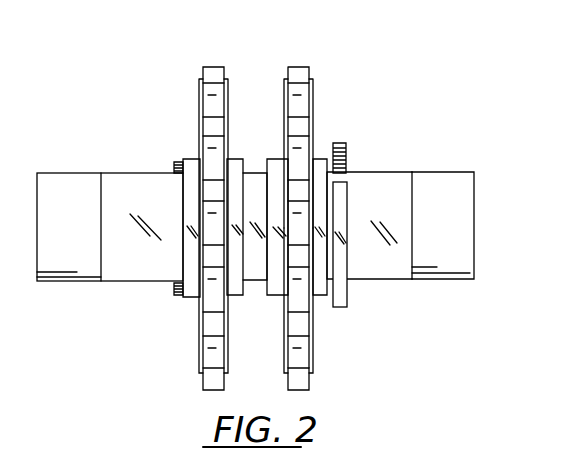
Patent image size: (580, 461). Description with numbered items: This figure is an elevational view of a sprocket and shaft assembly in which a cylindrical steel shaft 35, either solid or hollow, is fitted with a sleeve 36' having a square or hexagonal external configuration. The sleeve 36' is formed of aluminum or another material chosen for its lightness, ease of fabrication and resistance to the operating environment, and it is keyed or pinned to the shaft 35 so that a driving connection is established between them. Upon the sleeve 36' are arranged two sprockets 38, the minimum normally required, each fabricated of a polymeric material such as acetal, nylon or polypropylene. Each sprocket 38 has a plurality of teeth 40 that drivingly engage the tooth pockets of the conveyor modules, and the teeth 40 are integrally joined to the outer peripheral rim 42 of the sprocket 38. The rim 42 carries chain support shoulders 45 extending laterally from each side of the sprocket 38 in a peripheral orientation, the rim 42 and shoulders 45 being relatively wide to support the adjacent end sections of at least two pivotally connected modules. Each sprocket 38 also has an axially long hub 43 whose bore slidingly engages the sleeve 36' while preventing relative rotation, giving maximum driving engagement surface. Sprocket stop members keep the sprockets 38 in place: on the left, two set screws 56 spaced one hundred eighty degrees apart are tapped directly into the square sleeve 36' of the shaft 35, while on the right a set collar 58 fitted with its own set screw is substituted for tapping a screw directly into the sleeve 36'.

The cylindrical steel shaft 35 is at (65, 275).
The sleeve 36' is at (385, 208).
The sprockets 38 is at (294, 60).
The teeth 40 is at (309, 381).
The outer peripheral rim 42 is at (313, 361).
The hub 43 is at (191, 160).
The chain support shoulders 45 is at (313, 77).
The set screws 56 is at (174, 165).
The set collar 58 is at (346, 182).